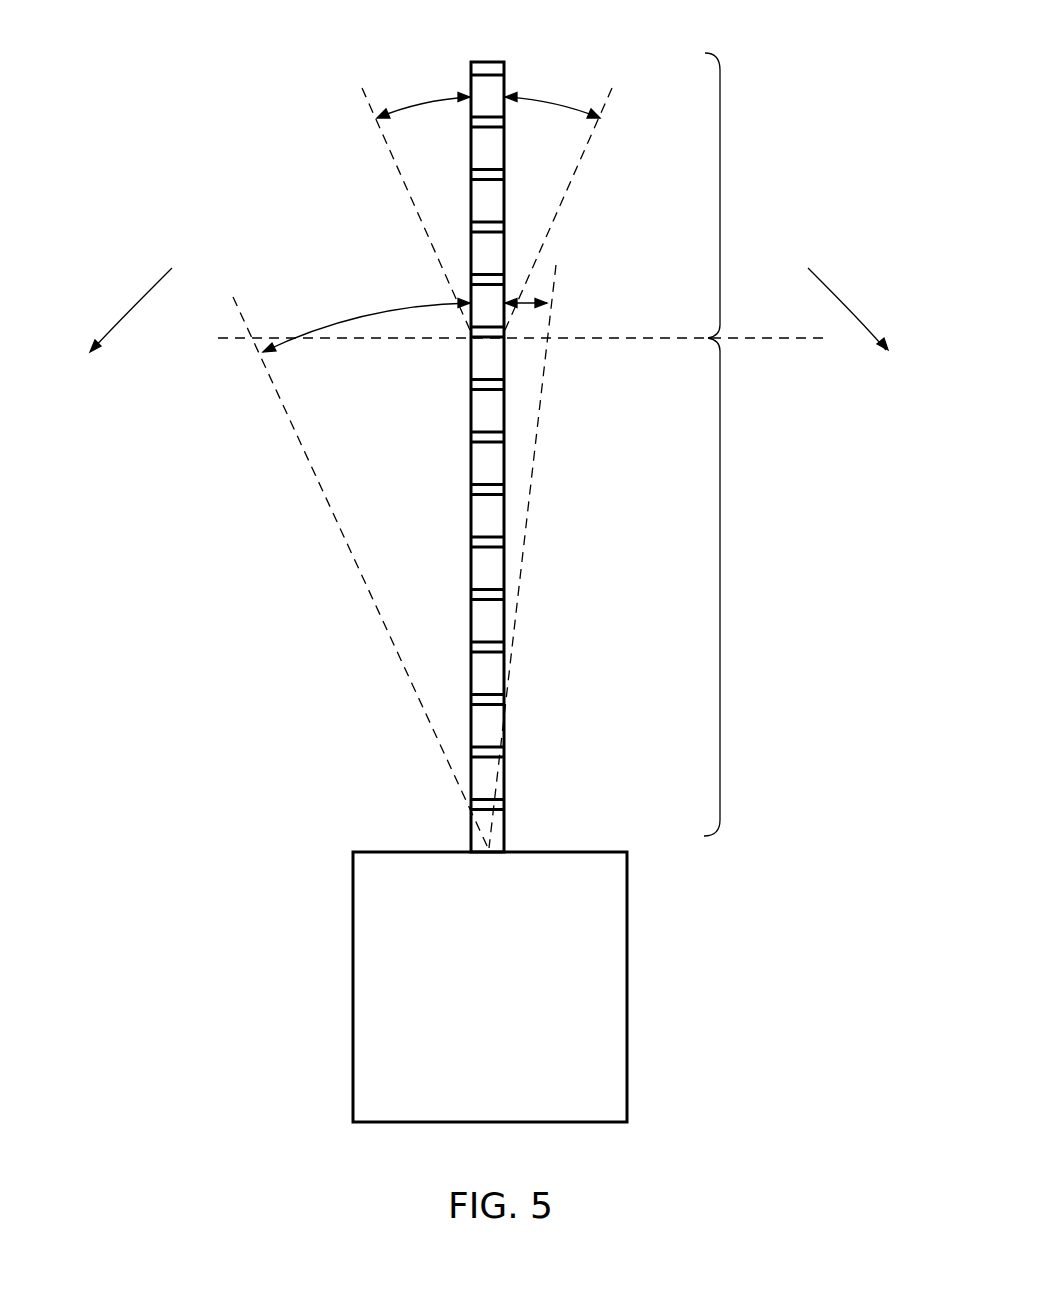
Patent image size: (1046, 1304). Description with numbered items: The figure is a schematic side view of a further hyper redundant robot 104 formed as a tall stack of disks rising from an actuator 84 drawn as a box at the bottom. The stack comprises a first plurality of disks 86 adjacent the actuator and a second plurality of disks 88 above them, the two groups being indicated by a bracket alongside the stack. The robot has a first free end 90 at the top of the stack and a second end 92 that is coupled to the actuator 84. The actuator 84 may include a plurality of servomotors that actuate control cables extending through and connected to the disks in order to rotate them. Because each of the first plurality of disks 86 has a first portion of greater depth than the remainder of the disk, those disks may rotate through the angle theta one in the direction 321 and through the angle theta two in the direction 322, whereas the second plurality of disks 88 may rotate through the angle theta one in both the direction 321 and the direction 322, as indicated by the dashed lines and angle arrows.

The first free end 90 is at (396, 54).
The actuator 84 is at (507, 996).
The hyper redundant robot 104 is at (872, 198).
The second plurality of disks 88 is at (720, 183).
The first plurality of disks 86 is at (720, 585).
The direction 321 is at (138, 290).
The direction 322 is at (842, 290).
The second end 92 is at (375, 806).